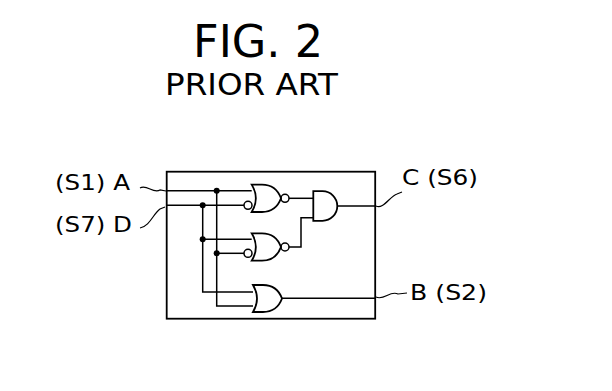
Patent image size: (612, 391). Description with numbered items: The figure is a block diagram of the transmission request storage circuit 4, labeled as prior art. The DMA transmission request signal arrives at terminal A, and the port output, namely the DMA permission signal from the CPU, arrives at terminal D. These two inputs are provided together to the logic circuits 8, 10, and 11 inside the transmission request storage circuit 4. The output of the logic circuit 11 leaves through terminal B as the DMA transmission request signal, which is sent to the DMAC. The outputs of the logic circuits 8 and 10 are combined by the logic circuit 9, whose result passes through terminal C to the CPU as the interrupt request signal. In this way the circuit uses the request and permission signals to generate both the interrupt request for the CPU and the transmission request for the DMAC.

The transmission request storage circuit 4 is at (166, 292).
The logic circuit 8 is at (263, 172).
The logic circuit 9 is at (327, 180).
The logic circuit 10 is at (280, 258).
The logic circuit 11 is at (280, 310).